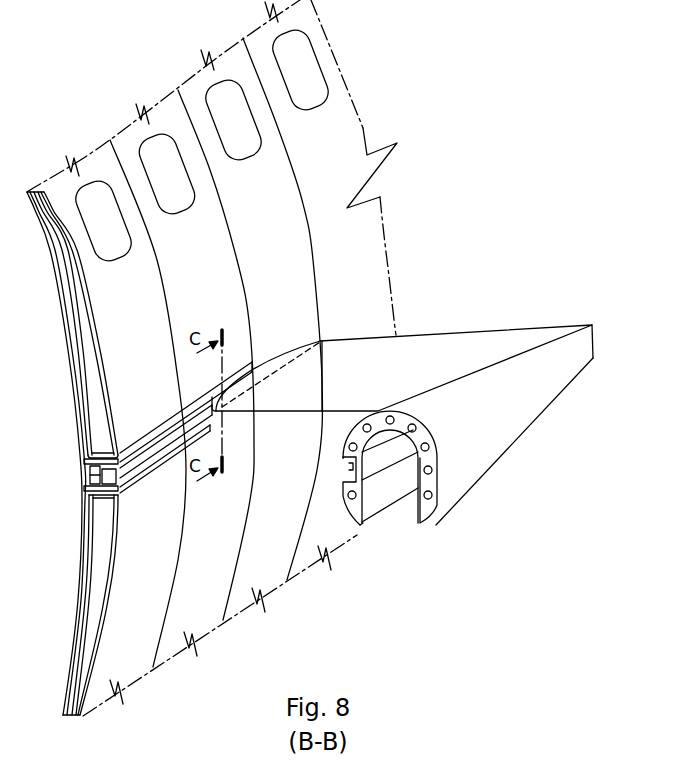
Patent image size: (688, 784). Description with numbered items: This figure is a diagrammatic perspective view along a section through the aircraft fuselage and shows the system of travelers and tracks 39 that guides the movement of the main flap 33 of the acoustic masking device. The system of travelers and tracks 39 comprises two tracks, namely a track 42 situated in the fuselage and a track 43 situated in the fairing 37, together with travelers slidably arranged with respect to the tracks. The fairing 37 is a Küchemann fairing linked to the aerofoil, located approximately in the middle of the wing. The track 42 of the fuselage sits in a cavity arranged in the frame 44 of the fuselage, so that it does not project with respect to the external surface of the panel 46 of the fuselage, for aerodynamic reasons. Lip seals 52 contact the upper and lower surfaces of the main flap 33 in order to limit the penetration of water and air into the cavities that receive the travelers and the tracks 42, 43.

The panel 46 is at (340, 156).
The flap 33 is at (437, 336).
The fairing 37 is at (472, 443).
The track 43 is at (357, 470).
The frame 44 is at (100, 392).
The lip seals 52 is at (140, 440).
The track 42 is at (108, 480).
The system of travelers and tracks 39 is at (72, 482).